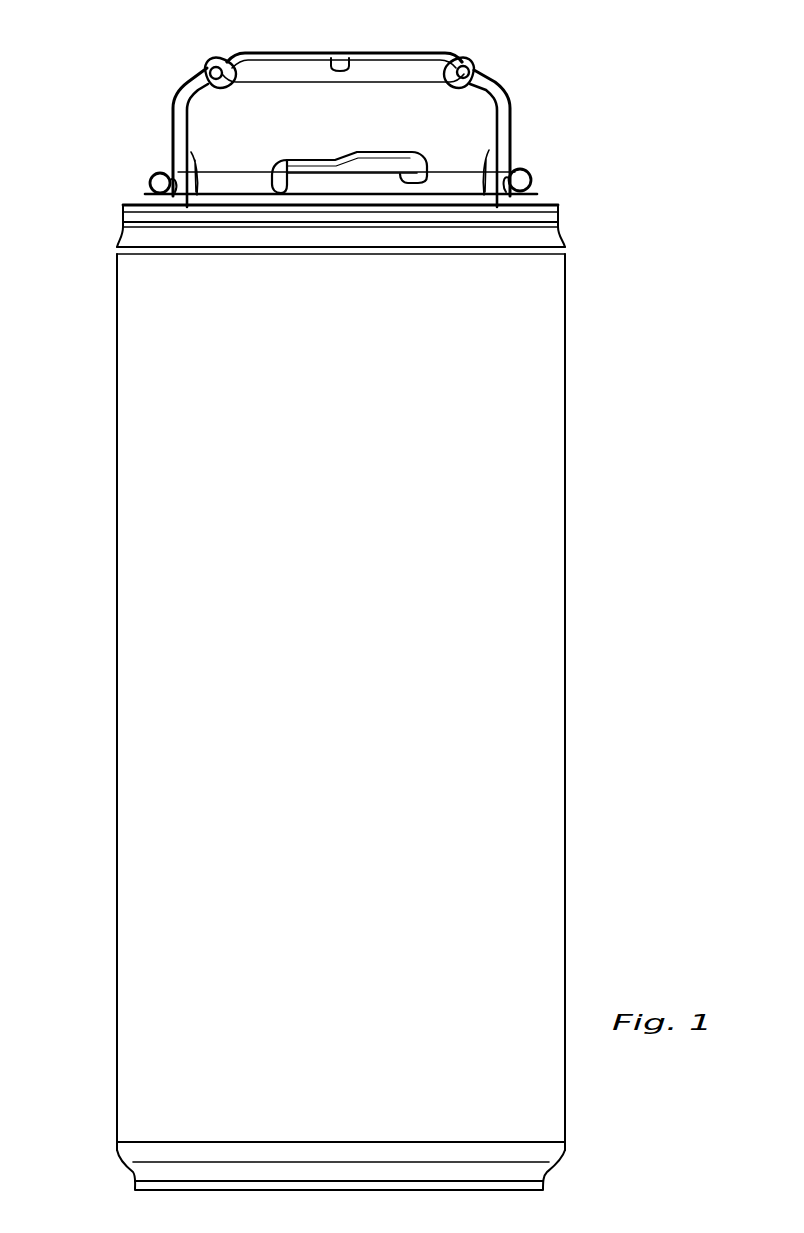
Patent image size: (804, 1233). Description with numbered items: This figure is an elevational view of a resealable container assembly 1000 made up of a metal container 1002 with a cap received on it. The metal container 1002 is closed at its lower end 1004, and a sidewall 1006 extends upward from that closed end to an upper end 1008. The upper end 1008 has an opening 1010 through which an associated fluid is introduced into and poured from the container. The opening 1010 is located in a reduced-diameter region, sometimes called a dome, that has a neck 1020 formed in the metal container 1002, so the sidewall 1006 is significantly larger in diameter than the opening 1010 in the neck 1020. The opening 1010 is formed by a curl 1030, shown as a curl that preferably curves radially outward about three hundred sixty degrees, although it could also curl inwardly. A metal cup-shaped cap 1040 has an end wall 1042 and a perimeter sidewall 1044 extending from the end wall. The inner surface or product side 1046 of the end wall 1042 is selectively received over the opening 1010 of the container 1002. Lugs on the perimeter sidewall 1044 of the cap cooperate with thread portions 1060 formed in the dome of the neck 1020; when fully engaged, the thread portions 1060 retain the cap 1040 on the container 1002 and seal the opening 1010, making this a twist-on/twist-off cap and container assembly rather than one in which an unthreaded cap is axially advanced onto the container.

The resealable container assembly 1000 is at (580, 422).
The metal container 1002 is at (494, 830).
The lower end 1004 is at (133, 1150).
The sidewall 1006 is at (116, 800).
The upper end 1008 is at (124, 211).
The opening 1010 is at (446, 74).
The neck 1020 is at (198, 102).
The curl 1030 is at (482, 80).
The cap 1040 is at (168, 101).
The end wall 1042 is at (384, 54).
The perimeter sidewall 1044 is at (173, 153).
The product side 1046 is at (341, 56).
The thread portions 1060 is at (331, 157).